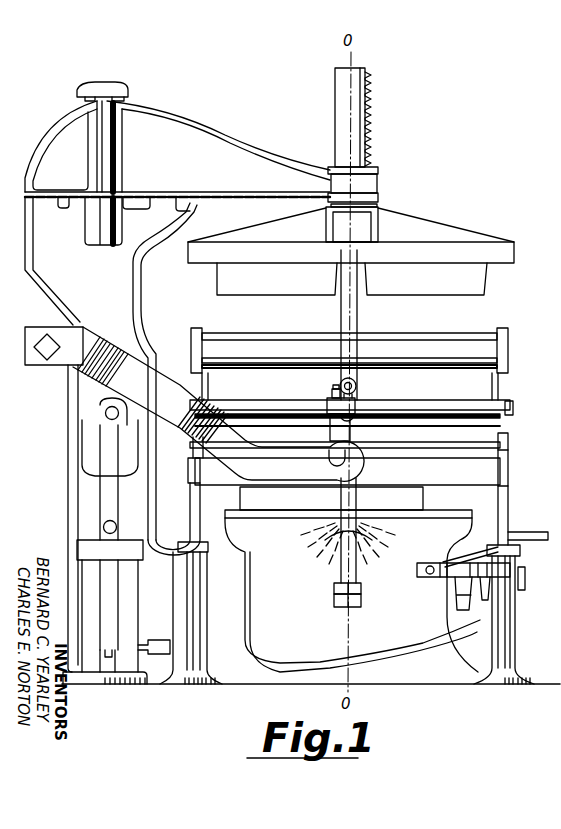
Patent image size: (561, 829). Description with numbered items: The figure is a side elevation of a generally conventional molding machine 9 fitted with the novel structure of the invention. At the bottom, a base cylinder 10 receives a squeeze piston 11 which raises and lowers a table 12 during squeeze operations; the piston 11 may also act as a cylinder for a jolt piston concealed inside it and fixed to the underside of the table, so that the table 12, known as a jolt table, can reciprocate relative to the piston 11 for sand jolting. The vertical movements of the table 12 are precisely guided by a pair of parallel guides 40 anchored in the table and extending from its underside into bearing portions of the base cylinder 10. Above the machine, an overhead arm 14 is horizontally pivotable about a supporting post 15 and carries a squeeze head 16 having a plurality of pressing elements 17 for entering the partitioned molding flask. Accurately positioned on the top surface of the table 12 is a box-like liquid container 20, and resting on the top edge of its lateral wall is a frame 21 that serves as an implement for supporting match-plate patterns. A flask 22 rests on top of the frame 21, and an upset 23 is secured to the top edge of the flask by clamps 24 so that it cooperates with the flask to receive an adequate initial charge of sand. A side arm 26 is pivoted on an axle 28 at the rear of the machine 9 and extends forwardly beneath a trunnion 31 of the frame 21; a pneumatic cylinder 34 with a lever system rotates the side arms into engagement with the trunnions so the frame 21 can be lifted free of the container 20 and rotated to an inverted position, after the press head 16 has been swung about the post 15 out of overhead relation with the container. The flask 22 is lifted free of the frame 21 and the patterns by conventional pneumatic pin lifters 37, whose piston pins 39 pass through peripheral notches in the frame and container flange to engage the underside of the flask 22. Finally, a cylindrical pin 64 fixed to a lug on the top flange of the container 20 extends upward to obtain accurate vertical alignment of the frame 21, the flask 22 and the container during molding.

The molding machine 9 is at (158, 100).
The base cylinder 10 is at (246, 552).
The squeeze piston 11 is at (425, 499).
The table 12 is at (508, 474).
The overhead arm 14 is at (228, 139).
The supporting post 15 is at (92, 78).
The squeeze head 16 is at (425, 226).
The pressing elements 17 is at (213, 280).
The liquid container 20 is at (508, 441).
The frame 21 is at (512, 410).
The flask 22 is at (506, 365).
The upset 23 is at (508, 350).
The clamps 24 is at (508, 333).
The side arm 26 is at (183, 430).
The axle 28 is at (45, 355).
The trunnion 31 is at (358, 406).
The pneumatic cylinder 34 is at (140, 604).
The pneumatic pin lifters 37 is at (210, 617).
The piston pin 39 is at (186, 497).
The parallel guides 40 is at (336, 562).
The cylindrical pin 64 is at (329, 394).